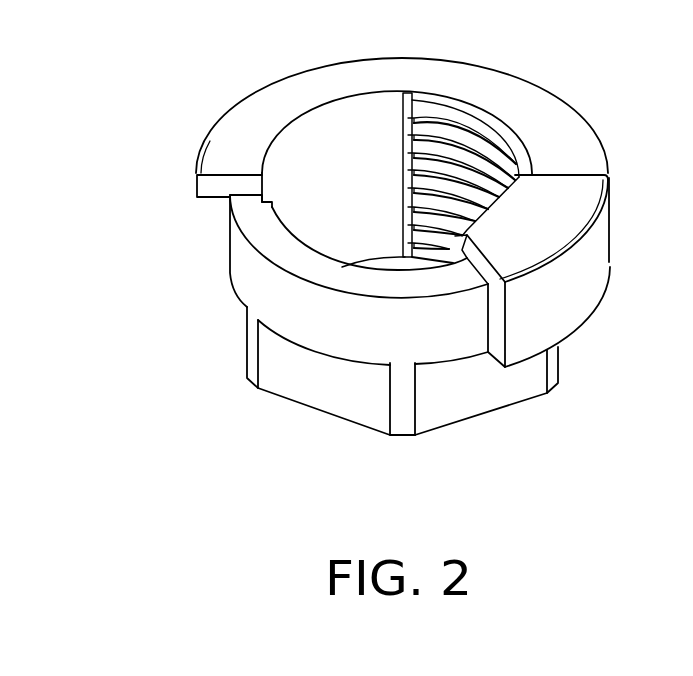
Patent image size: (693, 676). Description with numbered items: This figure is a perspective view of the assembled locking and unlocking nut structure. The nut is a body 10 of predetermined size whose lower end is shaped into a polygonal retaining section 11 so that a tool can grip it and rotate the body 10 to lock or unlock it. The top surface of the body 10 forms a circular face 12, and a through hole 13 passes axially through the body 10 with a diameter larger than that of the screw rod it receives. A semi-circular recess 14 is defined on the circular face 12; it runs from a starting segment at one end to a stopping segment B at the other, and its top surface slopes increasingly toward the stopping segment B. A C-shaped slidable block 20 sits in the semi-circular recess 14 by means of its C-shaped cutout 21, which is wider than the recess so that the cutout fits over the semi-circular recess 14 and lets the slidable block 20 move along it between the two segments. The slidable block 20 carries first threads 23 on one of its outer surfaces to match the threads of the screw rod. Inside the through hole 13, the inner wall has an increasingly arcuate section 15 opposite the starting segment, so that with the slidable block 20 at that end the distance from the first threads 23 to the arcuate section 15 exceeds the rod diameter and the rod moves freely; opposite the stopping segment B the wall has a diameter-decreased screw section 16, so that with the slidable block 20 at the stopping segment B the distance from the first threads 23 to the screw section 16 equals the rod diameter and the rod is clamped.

The body 10 is at (245, 340).
The polygonal retaining section 11 is at (273, 380).
The circular face 12 is at (230, 142).
The stopping segment B is at (247, 210).
The through hole 13 is at (376, 267).
The semi-circular recess 14 is at (275, 247).
The arcuate section 15 is at (360, 120).
The diameter-decreased screw section 16 is at (477, 140).
The slidable block 20 is at (604, 248).
The C-shaped cutout 21 is at (487, 327).
The first threads 23 is at (457, 266).